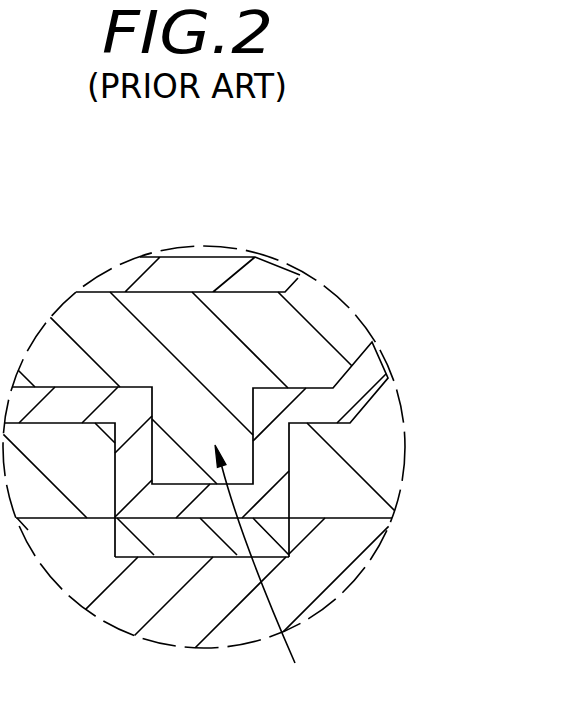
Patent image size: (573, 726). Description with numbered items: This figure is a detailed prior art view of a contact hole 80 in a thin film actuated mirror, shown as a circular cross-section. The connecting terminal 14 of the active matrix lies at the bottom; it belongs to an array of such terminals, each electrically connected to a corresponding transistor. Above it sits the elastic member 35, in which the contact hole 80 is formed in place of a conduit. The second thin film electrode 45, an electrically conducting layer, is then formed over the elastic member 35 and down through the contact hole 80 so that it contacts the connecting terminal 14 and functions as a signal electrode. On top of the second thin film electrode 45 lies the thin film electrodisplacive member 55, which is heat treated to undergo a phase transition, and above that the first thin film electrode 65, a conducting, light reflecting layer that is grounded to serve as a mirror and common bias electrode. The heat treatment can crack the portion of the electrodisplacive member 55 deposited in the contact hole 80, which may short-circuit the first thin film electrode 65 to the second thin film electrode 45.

The connecting terminal 14 is at (185, 560).
The elastic member 35 is at (368, 452).
The second thin film electrode 45 is at (362, 375).
The thin film electrodisplacive member 55 is at (325, 323).
The first thin film electrode 65 is at (257, 277).
The contact hole 80 is at (265, 572).